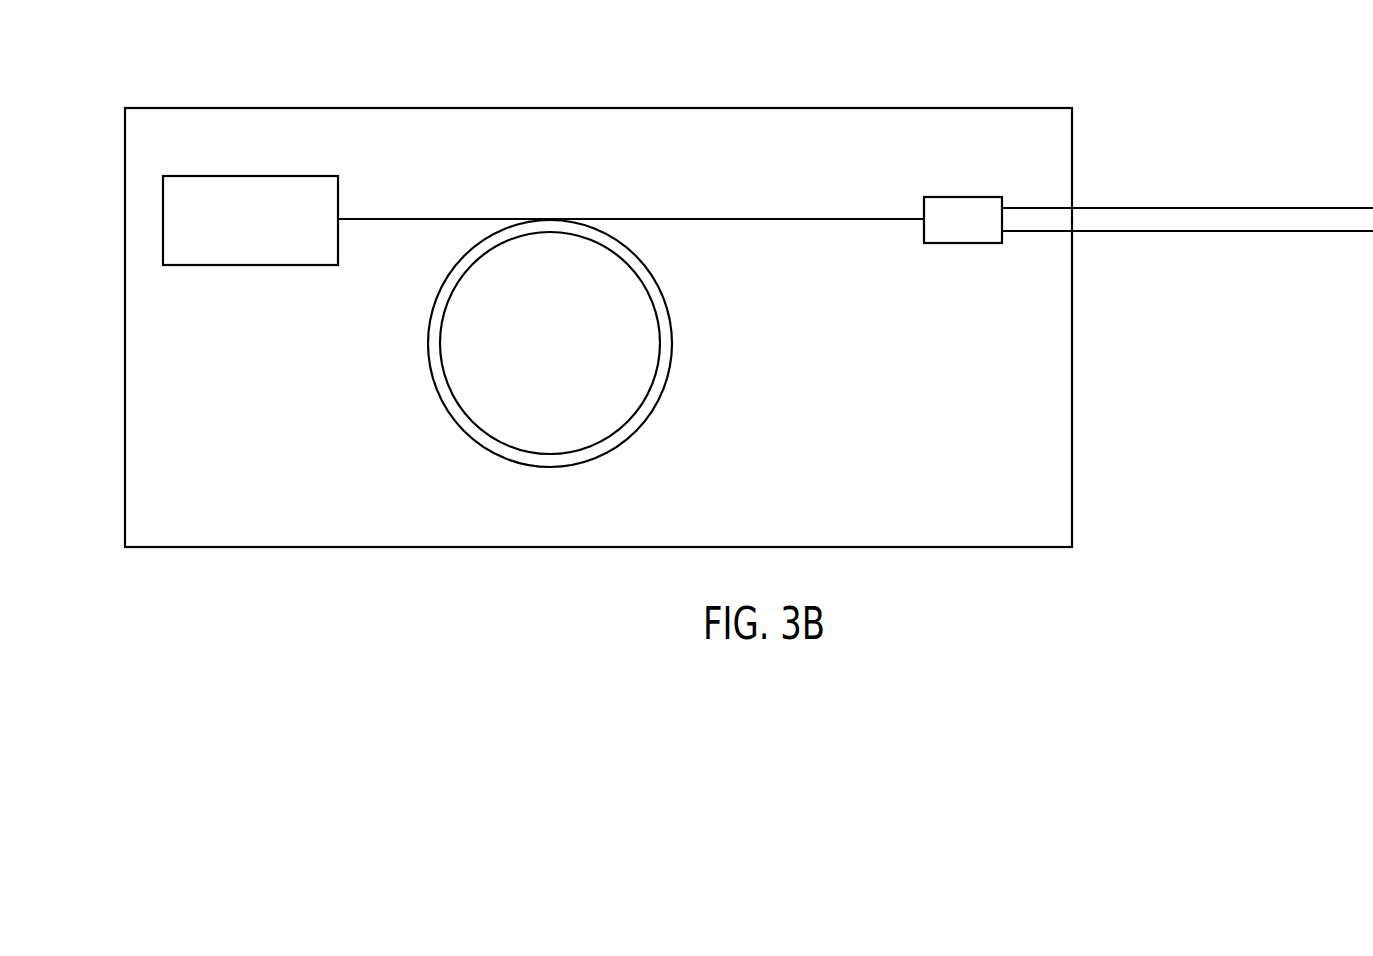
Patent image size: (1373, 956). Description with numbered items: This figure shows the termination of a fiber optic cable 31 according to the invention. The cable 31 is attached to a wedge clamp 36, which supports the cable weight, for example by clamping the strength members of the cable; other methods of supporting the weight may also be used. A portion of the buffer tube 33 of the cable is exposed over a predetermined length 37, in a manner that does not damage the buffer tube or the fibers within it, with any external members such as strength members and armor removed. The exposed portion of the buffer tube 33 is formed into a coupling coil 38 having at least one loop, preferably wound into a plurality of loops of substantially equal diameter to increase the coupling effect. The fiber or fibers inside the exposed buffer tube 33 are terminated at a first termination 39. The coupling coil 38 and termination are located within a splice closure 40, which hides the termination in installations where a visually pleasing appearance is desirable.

The fiber optic cable 31 is at (1312, 231).
The buffer tube 33 is at (830, 220).
The wedge clamp 36 is at (959, 243).
The predetermined length 37 is at (924, 22).
The coupling coil 38 is at (615, 448).
The first termination 39 is at (265, 265).
The splice closure 40 is at (358, 547).